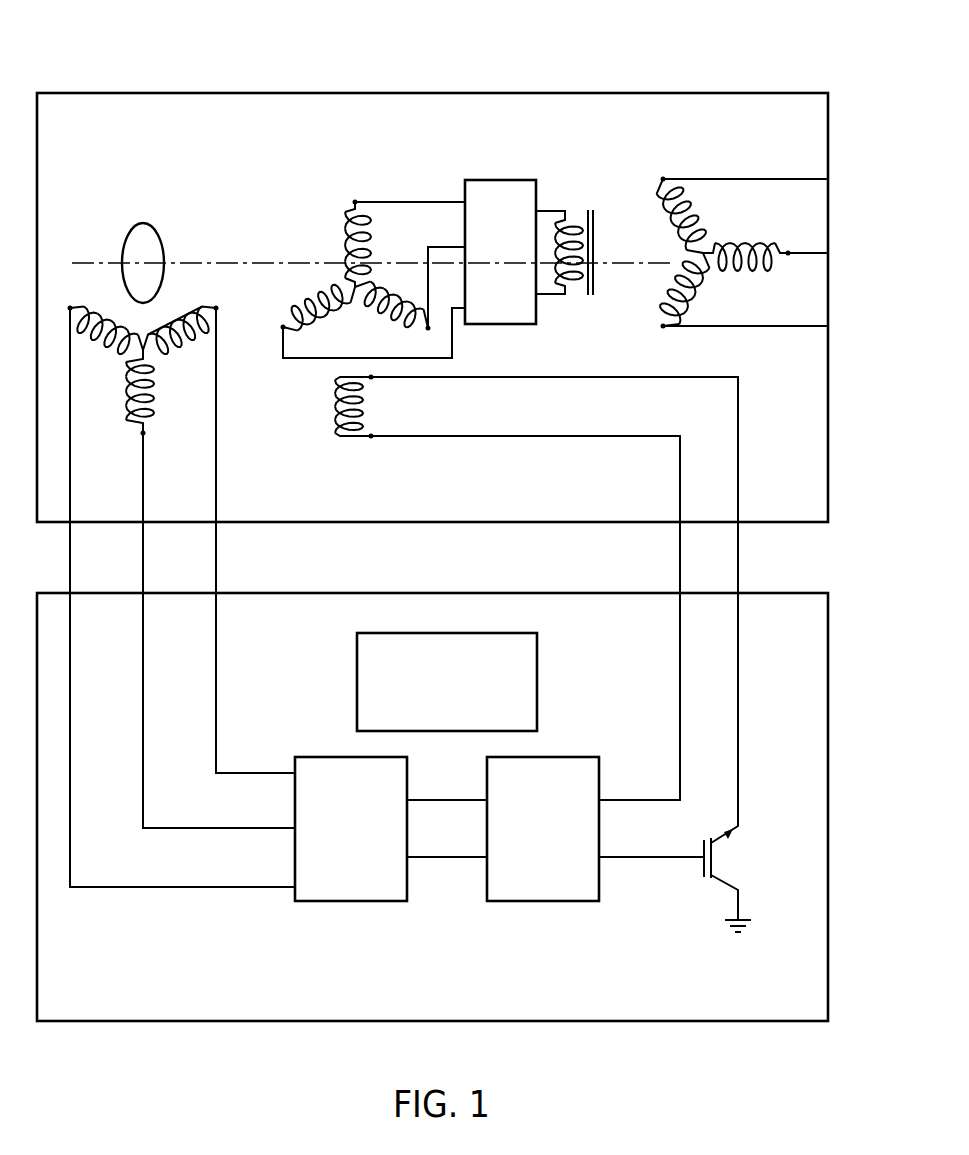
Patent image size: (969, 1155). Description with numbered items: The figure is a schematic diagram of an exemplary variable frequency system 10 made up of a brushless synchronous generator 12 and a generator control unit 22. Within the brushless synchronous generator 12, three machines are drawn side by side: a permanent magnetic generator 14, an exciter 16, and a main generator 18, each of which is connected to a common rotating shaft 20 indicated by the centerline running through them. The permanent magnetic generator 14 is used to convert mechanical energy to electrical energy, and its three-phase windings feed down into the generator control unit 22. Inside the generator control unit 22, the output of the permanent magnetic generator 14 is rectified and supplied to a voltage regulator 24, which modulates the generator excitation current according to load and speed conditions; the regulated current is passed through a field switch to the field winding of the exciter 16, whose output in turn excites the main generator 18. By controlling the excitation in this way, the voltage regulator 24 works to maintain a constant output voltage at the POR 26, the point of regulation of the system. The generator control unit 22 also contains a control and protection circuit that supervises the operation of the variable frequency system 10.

The variable frequency system 10 is at (826, 60).
The brushless synchronous generator 12 is at (98, 93).
The permanent magnetic generator 14 is at (163, 221).
The exciter 16 is at (512, 152).
The main generator 18 is at (728, 152).
The rotating shaft 20 is at (287, 262).
The generator control unit 22 is at (715, 1021).
The voltage regulator 24 is at (543, 901).
The POR 26 is at (190, 887).